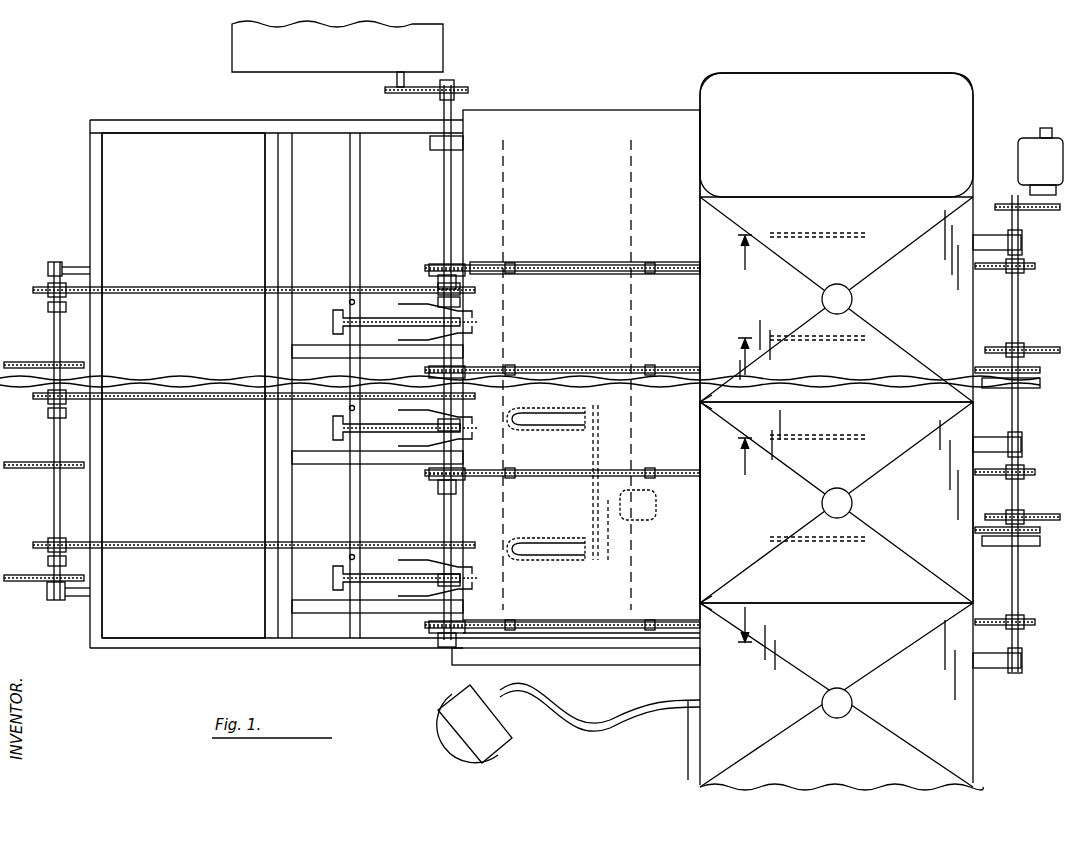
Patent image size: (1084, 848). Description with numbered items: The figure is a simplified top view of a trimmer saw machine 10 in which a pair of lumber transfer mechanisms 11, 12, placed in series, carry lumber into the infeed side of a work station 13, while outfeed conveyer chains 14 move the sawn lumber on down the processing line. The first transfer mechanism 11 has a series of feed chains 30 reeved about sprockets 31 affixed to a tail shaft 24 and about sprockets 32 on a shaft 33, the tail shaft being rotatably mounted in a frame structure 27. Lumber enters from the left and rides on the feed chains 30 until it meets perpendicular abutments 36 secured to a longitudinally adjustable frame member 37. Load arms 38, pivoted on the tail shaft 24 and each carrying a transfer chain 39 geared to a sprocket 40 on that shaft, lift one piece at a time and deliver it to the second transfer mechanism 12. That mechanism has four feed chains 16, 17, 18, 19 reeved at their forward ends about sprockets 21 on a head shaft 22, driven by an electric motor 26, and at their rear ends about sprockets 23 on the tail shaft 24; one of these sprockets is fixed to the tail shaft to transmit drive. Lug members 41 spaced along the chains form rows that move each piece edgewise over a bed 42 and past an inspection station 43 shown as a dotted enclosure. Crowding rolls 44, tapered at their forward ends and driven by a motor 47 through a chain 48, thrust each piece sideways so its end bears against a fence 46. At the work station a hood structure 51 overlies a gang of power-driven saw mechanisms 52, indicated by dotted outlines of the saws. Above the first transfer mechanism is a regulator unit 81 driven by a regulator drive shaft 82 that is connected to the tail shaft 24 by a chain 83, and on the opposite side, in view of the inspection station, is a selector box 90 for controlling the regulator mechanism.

The trimmer saw machine 10 is at (753, 70).
The lumber transfer mechanism 11 is at (182, 282).
The lumber transfer mechanism 12 is at (582, 266).
The work station 13 is at (812, 200).
The outfeed conveyer chains 14 is at (1042, 349).
The feed chain 16 is at (548, 274).
The feed chain 17 is at (590, 370).
The feed chain 18 is at (684, 472).
The feed chain 19 is at (622, 626).
The sprockets 21 is at (1028, 270).
The head shaft 22 is at (1016, 318).
The sprockets 23 is at (440, 265).
The tail shaft 24 is at (443, 190).
The electric motor 26 is at (1022, 178).
The frame structure 27 is at (200, 128).
The feed chains 30 is at (232, 292).
The sprockets 31 is at (458, 290).
The sprockets 32 is at (40, 283).
The shaft 33 is at (55, 330).
The perpendicular abutments 36 is at (348, 302).
The frame member 37 is at (356, 372).
The load arms 38 is at (400, 314).
The transfer chain 39 is at (335, 322).
The sprocket 40 is at (458, 428).
The lug members 41 is at (508, 264).
The bed 42 is at (565, 160).
The inspection station 43 is at (632, 338).
The crowding rolls 44 is at (560, 424).
The fence 46 is at (545, 650).
The motor 47 is at (648, 512).
The chain 48 is at (592, 492).
The hood structure 51 is at (905, 528).
The power-driven saw mechanisms 52 is at (838, 238).
The regulator unit 81 is at (456, 45).
The regulator drive shaft 82 is at (394, 78).
The chain 83 is at (433, 95).
The selector box 90 is at (440, 716).